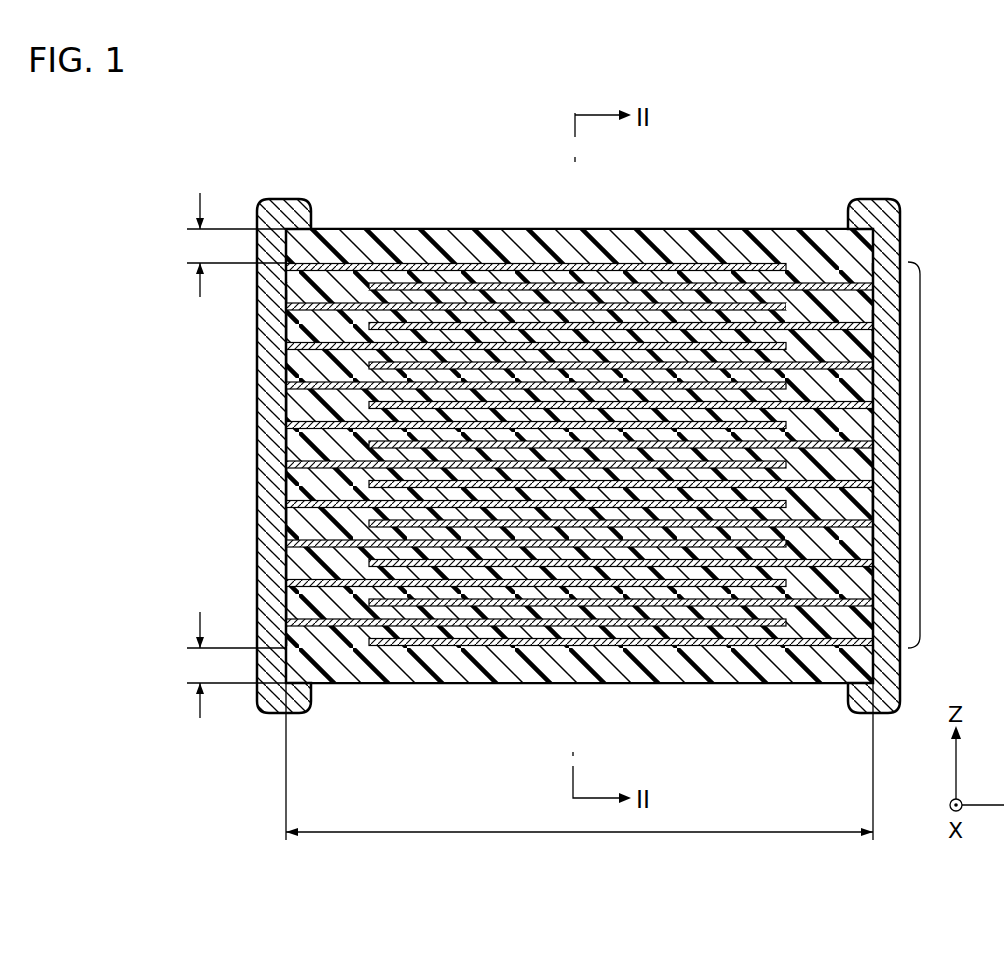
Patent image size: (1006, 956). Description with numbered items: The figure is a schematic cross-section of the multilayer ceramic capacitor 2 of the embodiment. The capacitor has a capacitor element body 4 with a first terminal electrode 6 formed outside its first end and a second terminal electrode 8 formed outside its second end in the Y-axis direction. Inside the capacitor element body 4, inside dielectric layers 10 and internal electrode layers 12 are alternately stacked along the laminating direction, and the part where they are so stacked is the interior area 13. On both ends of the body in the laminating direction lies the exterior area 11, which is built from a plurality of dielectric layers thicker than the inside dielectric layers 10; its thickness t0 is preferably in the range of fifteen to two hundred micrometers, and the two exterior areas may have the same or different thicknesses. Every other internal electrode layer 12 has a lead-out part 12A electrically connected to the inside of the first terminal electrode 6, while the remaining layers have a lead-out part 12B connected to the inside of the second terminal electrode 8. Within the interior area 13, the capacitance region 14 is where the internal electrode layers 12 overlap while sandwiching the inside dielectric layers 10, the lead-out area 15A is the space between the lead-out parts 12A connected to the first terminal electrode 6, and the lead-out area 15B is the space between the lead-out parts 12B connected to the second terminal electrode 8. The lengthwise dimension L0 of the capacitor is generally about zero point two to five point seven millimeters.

The multilayer ceramic capacitor 2 is at (573, 472).
The capacitor element body 4 is at (722, 686).
The first terminal electrode 6 is at (270, 543).
The second terminal electrode 8 is at (877, 204).
The inside dielectric layer 10 is at (530, 264).
The exterior area 11 is at (462, 250).
The internal electrode layer 12 is at (533, 452).
The lead-out part 12A is at (343, 258).
The lead-out part 12B is at (826, 326).
The interior area 13 is at (933, 455).
The capacitance region 14 is at (702, 266).
The lead-out area 15A is at (303, 287).
The lead-out area 15B is at (853, 309).
The thickness of the exterior area t0 is at (236, 456).
The lengthwise dimension L0 is at (579, 774).